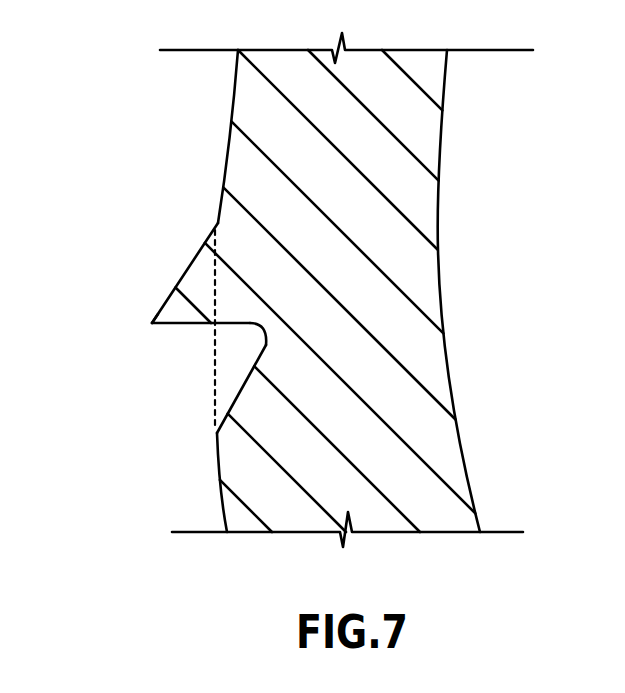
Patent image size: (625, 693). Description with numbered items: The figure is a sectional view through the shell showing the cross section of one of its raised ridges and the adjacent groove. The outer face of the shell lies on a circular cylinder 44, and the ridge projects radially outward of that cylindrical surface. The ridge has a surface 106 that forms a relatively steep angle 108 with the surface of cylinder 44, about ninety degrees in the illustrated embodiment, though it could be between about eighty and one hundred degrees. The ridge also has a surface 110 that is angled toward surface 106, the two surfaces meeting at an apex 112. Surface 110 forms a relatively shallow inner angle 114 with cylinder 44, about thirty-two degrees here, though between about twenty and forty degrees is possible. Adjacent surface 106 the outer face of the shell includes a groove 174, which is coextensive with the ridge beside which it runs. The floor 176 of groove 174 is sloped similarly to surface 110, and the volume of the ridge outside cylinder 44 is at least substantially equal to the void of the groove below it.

The circular cylinder 44 is at (225, 490).
The surface 106 is at (162, 325).
The steep angle 108 is at (210, 354).
The surface 110 is at (177, 287).
The apex 112 is at (150, 323).
The shallow inner angle 114 is at (200, 277).
The groove 174 is at (232, 368).
The floor 176 is at (228, 410).